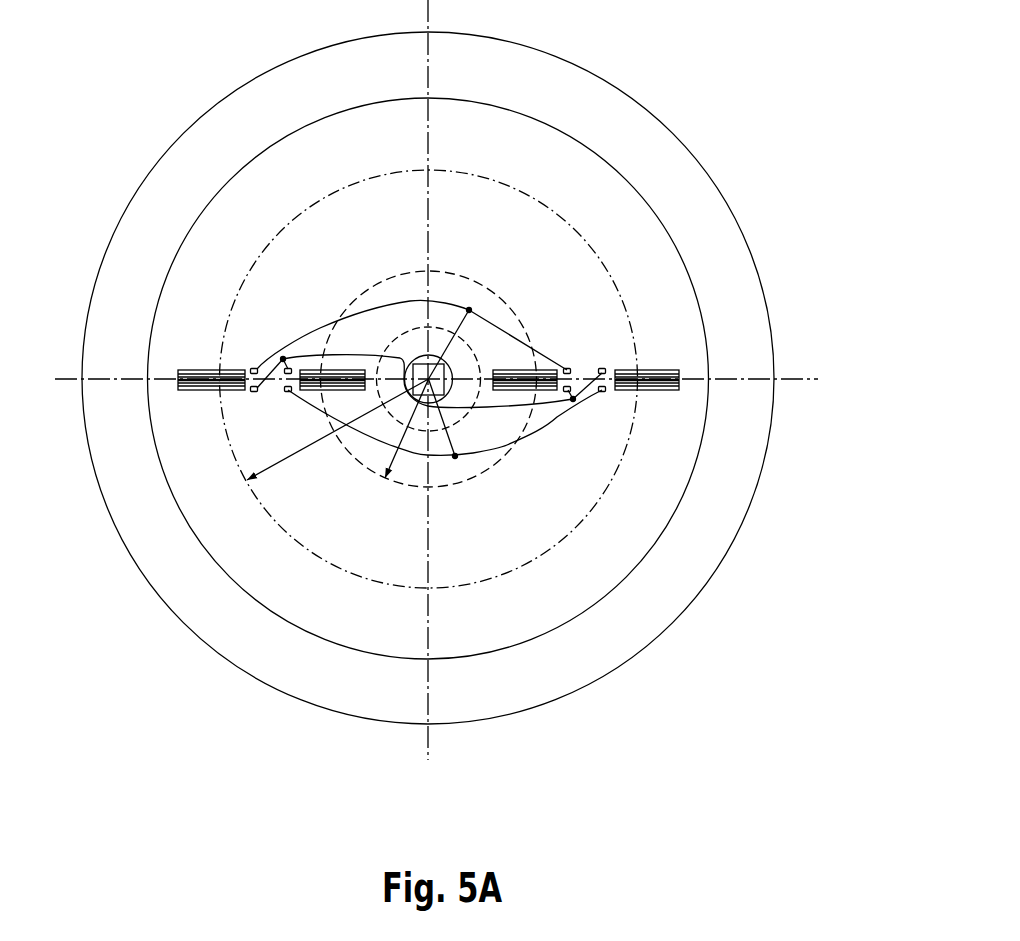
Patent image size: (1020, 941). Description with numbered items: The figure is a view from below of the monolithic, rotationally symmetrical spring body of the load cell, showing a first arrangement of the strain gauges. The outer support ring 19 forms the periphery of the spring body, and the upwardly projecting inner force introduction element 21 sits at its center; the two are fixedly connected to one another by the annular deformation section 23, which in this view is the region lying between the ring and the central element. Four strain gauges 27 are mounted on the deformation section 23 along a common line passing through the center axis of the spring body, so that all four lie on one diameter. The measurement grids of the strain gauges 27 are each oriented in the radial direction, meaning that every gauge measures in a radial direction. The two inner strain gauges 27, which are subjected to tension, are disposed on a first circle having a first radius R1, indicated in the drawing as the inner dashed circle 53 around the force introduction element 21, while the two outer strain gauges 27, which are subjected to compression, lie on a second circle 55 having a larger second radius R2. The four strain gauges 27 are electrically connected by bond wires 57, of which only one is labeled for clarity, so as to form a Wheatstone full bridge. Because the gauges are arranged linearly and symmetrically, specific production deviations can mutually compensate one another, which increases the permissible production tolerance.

The outer support ring 19 is at (608, 123).
The inner force introduction element 21 is at (445, 412).
The annular deformation section 23 is at (490, 221).
The strain gauges 27 is at (232, 367).
The inner circle 53 is at (490, 287).
The second circle 55 is at (535, 198).
The bond wires 57 is at (540, 432).
The first radius R1 is at (396, 455).
The second radius R2 is at (300, 453).